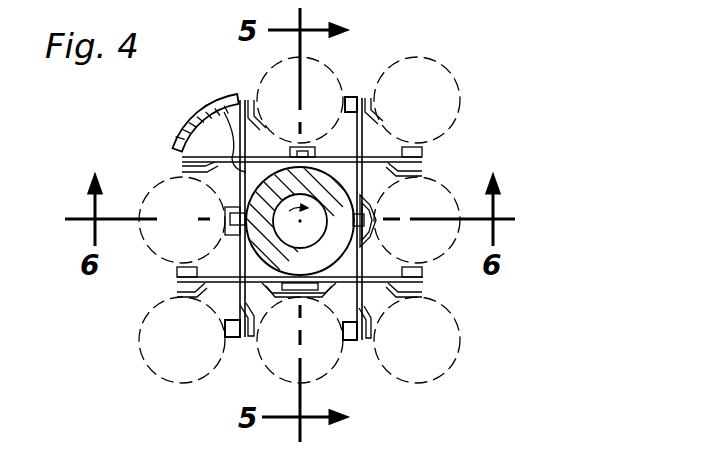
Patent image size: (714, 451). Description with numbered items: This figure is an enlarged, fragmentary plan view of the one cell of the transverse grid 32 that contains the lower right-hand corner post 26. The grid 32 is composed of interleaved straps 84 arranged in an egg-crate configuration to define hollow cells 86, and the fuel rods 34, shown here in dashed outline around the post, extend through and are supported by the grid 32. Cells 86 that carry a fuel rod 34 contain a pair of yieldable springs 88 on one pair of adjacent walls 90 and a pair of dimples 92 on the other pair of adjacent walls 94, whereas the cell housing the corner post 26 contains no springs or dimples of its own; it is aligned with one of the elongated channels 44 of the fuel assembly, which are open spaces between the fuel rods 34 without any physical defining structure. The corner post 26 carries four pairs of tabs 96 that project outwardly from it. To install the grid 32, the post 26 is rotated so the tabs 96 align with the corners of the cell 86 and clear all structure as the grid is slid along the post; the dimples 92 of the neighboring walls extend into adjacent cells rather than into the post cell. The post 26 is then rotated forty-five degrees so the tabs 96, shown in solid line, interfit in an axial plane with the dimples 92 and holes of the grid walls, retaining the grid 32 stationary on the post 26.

The corner post 26 is at (346, 198).
The transverse grid 32 is at (210, 295).
The fuel rod 34 is at (454, 71).
The elongated channel 44 is at (232, 210).
The strap 84 is at (230, 315).
The hollow cell 86 is at (362, 120).
The yieldable spring 88 is at (296, 147).
The cell wall 90 is at (227, 129).
The dimple 92 is at (378, 218).
The cell wall 94 is at (265, 285).
The tab 96 is at (268, 140).